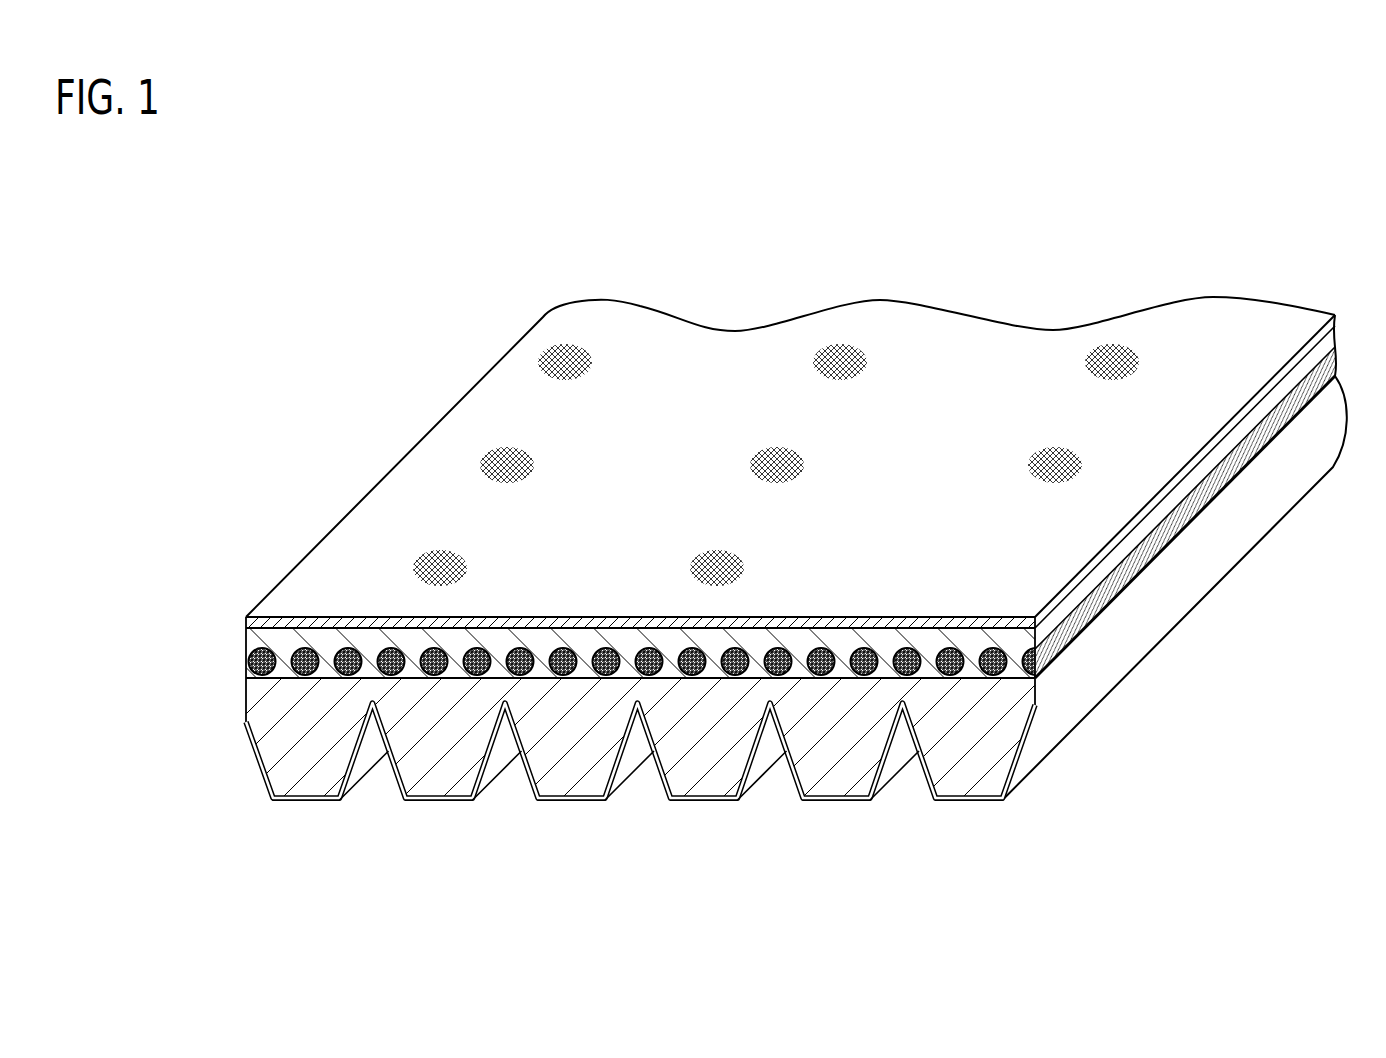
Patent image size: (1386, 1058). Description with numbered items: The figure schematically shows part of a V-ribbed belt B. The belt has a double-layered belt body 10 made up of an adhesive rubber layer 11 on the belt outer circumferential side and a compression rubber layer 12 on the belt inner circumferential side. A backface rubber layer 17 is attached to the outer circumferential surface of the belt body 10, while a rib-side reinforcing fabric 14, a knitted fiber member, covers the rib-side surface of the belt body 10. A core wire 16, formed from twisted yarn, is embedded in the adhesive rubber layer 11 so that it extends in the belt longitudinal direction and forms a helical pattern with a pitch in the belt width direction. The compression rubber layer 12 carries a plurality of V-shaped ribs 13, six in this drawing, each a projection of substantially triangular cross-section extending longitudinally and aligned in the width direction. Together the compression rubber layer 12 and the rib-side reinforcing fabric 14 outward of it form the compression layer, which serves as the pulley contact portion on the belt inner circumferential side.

The V-ribbed belt B is at (418, 298).
The belt body 10 is at (1176, 682).
The adhesive rubber layer 11 is at (1010, 642).
The compression rubber layer 12 is at (1000, 700).
The V-shaped rib 13 is at (307, 765).
The rib-side reinforcing fabric 14 is at (340, 801).
The core wire 16 is at (563, 649).
The backface rubber layer 17 is at (285, 625).